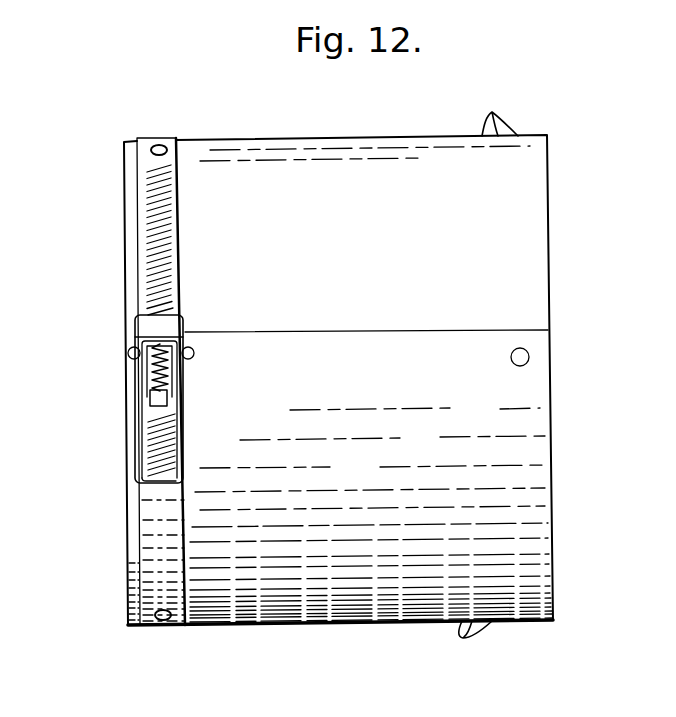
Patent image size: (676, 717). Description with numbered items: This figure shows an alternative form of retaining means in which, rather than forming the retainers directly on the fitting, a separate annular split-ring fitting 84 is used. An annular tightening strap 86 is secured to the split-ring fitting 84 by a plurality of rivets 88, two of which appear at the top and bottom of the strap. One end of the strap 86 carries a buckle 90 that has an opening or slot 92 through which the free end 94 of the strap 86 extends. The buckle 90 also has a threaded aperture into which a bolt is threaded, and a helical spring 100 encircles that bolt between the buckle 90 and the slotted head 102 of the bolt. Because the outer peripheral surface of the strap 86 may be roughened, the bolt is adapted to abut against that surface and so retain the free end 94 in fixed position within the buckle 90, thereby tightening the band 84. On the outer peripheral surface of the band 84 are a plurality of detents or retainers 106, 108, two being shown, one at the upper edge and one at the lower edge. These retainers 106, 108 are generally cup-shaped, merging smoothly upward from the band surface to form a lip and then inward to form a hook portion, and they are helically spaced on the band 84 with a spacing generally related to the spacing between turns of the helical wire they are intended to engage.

The annular split-ring fitting 84 is at (520, 537).
The annular tightening strap 86 is at (176, 270).
The rivets 88 is at (183, 141).
The buckle 90 is at (138, 329).
The opening or slot 92 is at (194, 350).
The free end of strap 94 is at (153, 484).
The helical spring 100 is at (158, 363).
The slotted head of the bolt 102 is at (152, 400).
The retainer or detent 106 is at (503, 117).
The retainer or detent 108 is at (484, 634).